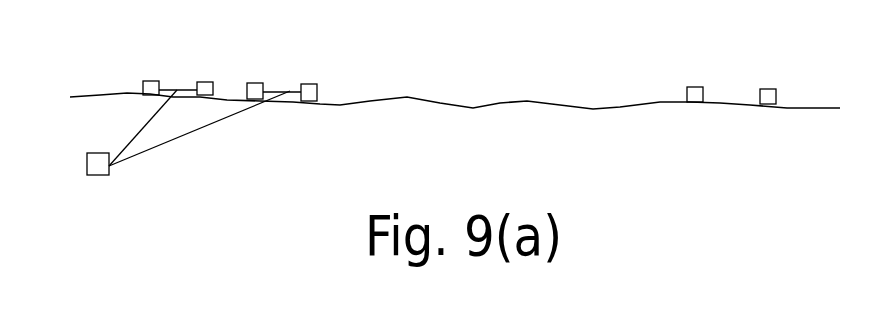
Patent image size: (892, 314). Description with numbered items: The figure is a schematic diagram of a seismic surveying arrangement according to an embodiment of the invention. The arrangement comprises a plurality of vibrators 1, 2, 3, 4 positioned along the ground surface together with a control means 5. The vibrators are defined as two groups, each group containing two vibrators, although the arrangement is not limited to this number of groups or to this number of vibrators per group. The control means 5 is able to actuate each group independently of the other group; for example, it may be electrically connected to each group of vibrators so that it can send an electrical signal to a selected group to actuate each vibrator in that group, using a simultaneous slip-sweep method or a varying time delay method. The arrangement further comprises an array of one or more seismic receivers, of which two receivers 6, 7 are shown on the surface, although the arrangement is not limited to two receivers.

The vibrator 1 is at (150, 83).
The vibrator 2 is at (203, 83).
The vibrator 3 is at (257, 83).
The vibrator 4 is at (310, 84).
The control means 5 is at (110, 173).
The seismic receiver 6 is at (692, 88).
The seismic receiver 7 is at (765, 93).